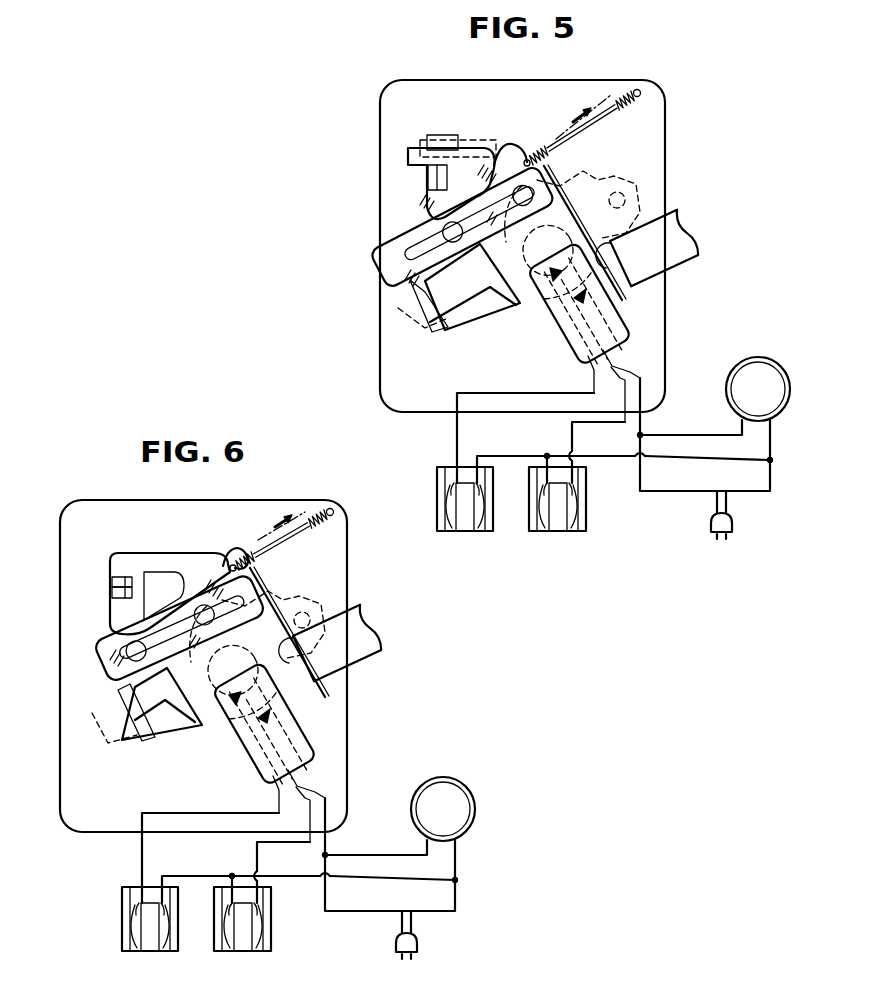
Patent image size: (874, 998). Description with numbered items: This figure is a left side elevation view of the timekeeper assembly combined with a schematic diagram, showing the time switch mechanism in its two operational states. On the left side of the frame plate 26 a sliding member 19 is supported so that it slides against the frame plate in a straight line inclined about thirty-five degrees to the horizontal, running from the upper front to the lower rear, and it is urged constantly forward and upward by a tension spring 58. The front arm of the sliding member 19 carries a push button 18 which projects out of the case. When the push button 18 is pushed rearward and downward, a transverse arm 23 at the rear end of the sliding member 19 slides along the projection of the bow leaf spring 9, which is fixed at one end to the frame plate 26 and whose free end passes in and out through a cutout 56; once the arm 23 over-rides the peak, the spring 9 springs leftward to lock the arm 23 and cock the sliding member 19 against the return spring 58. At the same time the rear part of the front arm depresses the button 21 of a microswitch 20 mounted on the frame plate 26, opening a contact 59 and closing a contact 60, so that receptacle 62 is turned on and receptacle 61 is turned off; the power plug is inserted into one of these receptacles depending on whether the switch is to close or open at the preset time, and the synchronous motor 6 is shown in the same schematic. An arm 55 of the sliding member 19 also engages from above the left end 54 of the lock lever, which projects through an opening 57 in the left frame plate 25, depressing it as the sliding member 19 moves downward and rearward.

In FIG. 5, the synchronous motor 6 is at (750, 358).
In FIG. 6, the synchronous motor 6 is at (447, 777).
In FIG. 5, the bow leaf spring 9 is at (462, 315).
In FIG. 6, the bow leaf spring 9 is at (170, 730).
In FIG. 5, the push button 18 is at (678, 210).
In FIG. 6, the push button 18 is at (369, 623).
In FIG. 5, the sliding member 19 is at (498, 155).
In FIG. 6, the sliding member 19 is at (200, 565).
In FIG. 5, the microswitch 20 is at (617, 325).
In FIG. 6, the microswitch 20 is at (296, 740).
In FIG. 5, the button of the microswitch 21 is at (600, 240).
In FIG. 6, the button of the microswitch 21 is at (272, 672).
In FIG. 5, the transverse arm 23 is at (415, 296).
In FIG. 6, the transverse arm 23 is at (118, 697).
In FIG. 6, the left frame plate 25 is at (76, 529).
In FIG. 5, the frame plate 26 is at (395, 133).
In FIG. 5, the left end of the lock lever 54 is at (437, 182).
In FIG. 6, the left end of the lock lever 54 is at (112, 595).
In FIG. 5, the arm of the sliding member 55 is at (408, 158).
In FIG. 6, the arm of the sliding member 55 is at (132, 555).
In FIG. 5, the cutout 56 is at (497, 305).
In FIG. 6, the cutout 56 is at (200, 727).
In FIG. 5, the opening 57 is at (443, 136).
In FIG. 6, the opening 57 is at (113, 584).
In FIG. 5, the tension spring 58 is at (602, 113).
In FIG. 6, the tension spring 58 is at (298, 528).
In FIG. 5, the contact 59 is at (596, 289).
In FIG. 6, the contact 59 is at (272, 712).
In FIG. 5, the contact 60 is at (554, 281).
In FIG. 6, the contact 60 is at (228, 695).
In FIG. 5, the receptacle 61 is at (557, 533).
In FIG. 6, the receptacle 61 is at (230, 953).
In FIG. 5, the receptacle 62 is at (465, 533).
In FIG. 6, the receptacle 62 is at (143, 953).